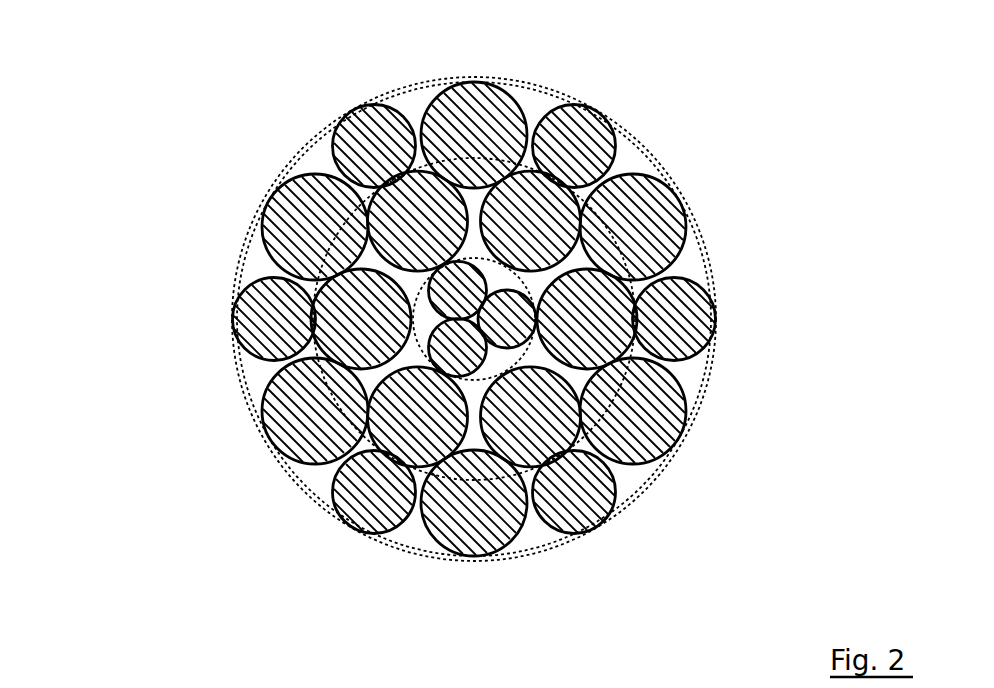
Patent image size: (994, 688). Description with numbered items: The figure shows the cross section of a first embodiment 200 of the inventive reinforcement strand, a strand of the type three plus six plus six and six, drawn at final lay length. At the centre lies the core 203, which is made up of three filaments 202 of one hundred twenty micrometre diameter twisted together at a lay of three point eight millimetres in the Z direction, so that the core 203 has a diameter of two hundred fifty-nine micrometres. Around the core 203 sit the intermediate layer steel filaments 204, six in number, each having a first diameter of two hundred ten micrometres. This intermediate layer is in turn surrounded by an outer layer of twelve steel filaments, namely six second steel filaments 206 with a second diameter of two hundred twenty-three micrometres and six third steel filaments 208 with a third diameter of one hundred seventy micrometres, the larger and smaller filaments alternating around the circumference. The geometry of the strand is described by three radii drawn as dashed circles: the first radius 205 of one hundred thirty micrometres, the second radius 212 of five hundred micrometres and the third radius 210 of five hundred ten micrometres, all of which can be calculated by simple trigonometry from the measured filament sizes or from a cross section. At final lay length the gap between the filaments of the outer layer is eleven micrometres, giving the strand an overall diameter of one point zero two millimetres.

The first embodiment 200 is at (185, 120).
The filaments 202 is at (452, 292).
The core 203 is at (423, 350).
The intermediate layer steel filaments 204 is at (362, 323).
The first radius 205 is at (370, 444).
The second steel filaments 206 is at (630, 225).
The third steel filaments 208 is at (582, 148).
The third radius 210 is at (705, 390).
The second radius 212 is at (655, 474).